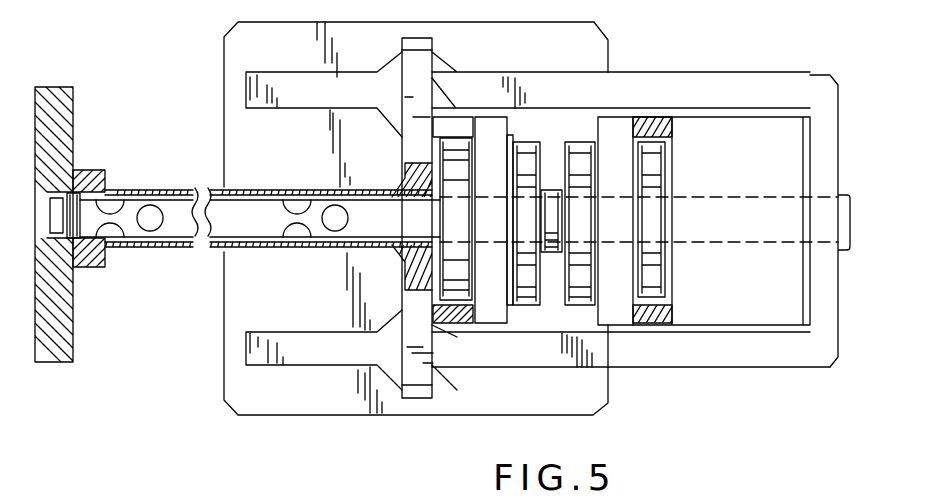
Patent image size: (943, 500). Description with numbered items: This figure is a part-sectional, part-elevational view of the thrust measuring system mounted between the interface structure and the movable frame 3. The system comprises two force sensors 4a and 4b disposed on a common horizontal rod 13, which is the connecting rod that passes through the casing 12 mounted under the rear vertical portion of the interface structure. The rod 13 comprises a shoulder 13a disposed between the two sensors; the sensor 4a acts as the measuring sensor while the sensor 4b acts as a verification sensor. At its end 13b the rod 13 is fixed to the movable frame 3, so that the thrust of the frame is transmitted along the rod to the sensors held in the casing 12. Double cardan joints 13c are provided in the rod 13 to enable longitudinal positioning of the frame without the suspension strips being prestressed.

The movable frame 3 is at (62, 92).
The end of the rod 13b is at (103, 204).
The rod 13 is at (177, 206).
The double cardan joints 13c is at (112, 226).
The casing 12 is at (232, 375).
The force sensor 4a is at (492, 316).
The shoulder 13a is at (550, 200).
The force sensor 4b is at (622, 128).